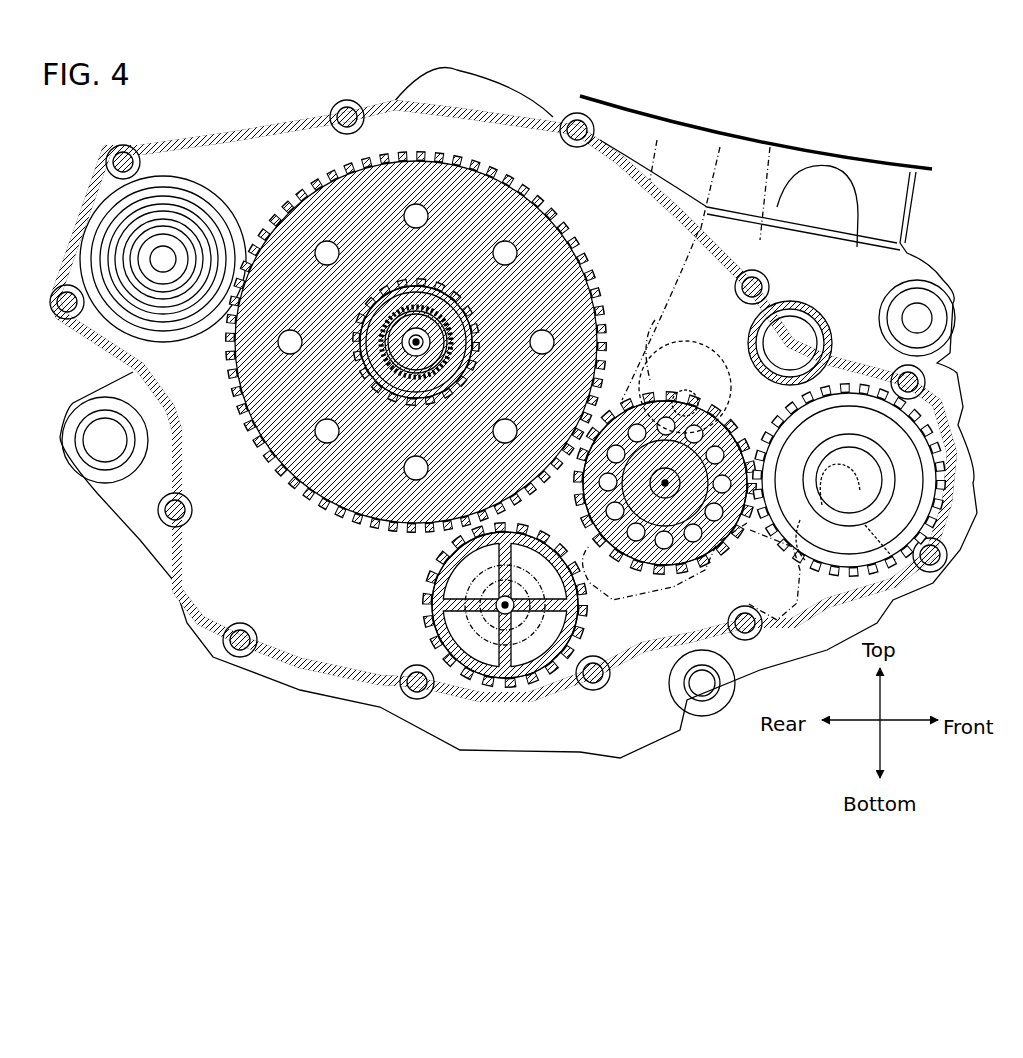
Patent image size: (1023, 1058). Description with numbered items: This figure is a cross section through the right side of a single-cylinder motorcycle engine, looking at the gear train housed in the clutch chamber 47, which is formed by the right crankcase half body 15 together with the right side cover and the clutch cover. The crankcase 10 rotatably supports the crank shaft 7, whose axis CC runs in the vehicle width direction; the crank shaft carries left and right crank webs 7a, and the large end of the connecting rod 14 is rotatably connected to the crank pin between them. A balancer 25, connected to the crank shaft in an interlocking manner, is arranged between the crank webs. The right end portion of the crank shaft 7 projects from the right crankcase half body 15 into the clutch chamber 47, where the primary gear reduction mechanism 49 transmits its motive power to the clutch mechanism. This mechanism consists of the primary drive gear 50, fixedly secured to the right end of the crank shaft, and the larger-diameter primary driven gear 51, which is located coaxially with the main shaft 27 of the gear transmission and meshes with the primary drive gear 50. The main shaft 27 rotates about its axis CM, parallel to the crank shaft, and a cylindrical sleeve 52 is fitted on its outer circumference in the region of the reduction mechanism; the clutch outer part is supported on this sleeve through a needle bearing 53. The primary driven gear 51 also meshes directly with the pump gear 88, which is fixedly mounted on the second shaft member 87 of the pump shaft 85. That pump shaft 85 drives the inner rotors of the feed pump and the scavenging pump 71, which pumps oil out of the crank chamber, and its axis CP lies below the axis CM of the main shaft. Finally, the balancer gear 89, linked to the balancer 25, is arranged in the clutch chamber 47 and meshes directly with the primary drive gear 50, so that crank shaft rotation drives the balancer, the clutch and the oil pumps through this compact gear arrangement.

The right crankcase half body 15 is at (243, 146).
The primary driven gear 51 is at (558, 206).
The connecting rod 14 is at (672, 293).
The crankcase 10 is at (922, 260).
The primary gear reduction mechanism 49 is at (622, 402).
The primary drive gear 50 is at (690, 395).
The balancer gear 89 is at (920, 410).
The axis of the main shaft CM is at (438, 292).
The main shaft 27 is at (395, 360).
The cylindrical sleeve 52 is at (472, 366).
The needle bearing 53 is at (435, 402).
The axis of the crank shaft CC is at (580, 425).
The balancer 25 is at (785, 572).
The crank shaft 7 is at (810, 605).
The crank webs 7a is at (655, 640).
The pump shaft 85 is at (498, 648).
The second shaft member 87 is at (478, 583).
The pump gear 88 is at (588, 585).
The scavenging pump 71 is at (532, 650).
The axis of the pump shaft CP is at (492, 623).
The clutch chamber 47 is at (328, 617).